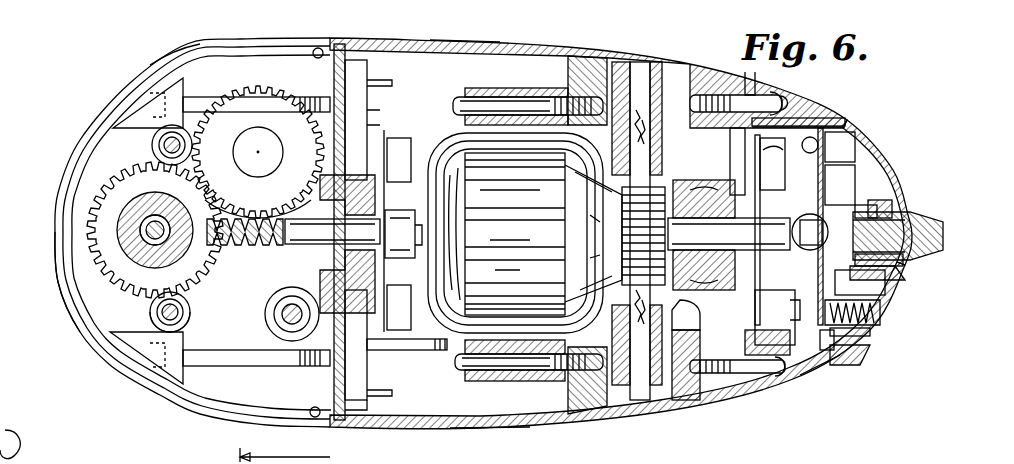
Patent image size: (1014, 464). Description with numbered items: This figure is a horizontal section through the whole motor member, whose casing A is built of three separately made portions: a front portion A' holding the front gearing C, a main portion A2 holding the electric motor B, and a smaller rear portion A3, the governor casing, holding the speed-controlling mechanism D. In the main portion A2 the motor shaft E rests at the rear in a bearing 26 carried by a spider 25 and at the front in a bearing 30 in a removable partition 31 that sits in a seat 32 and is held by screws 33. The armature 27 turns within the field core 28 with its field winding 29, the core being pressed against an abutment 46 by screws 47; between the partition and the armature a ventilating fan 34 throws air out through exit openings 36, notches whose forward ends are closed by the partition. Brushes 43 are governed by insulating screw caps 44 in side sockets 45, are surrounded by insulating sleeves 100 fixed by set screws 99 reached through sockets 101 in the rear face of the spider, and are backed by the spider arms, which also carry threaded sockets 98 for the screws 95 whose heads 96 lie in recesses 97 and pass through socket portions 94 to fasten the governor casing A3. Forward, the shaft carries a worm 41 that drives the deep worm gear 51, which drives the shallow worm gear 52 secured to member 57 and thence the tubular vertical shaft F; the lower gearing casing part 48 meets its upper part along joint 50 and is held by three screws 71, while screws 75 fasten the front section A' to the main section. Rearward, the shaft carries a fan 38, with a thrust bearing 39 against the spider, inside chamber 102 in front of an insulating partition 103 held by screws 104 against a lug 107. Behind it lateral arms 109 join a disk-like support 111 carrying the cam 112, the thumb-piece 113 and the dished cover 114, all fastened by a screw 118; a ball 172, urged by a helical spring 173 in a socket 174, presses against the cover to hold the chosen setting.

The spider 25 is at (737, 175).
The bearing 26 is at (700, 232).
The armature 27 is at (603, 243).
The field core 28 is at (545, 88).
The field winding 29 is at (492, 150).
The bearing 30 is at (325, 258).
The removable partition 31 is at (338, 386).
The seat 32 is at (346, 62).
The screws 33 is at (428, 350).
The ventilating fan or impeller 34 is at (399, 322).
The air exit openings 36 is at (360, 395).
The fan or impeller 38 is at (783, 160).
The thrust bearing 39 is at (758, 195).
The worm 41 is at (262, 215).
The brushes 43 is at (560, 375).
The adjustable screw caps 44 is at (628, 62).
The sockets 45 is at (640, 400).
The abutment 46 is at (590, 60).
The screws 47 is at (510, 97).
The lower part of the gearing casing 48 is at (95, 310).
The joint 50 is at (70, 296).
The deep worm gear 51 is at (268, 121).
The shallow worm gear 52 is at (142, 175).
The member 57 is at (148, 236).
The screws 71 is at (168, 140).
The screws 75 is at (200, 100).
The socket portions 94 is at (748, 78).
The screws 95 is at (790, 100).
The heads 96 is at (800, 108).
The recesses 97 is at (815, 120).
The threaded sockets 98 is at (708, 95).
The set screws 99 is at (690, 385).
The insulating sleeves 100 is at (590, 410).
The sockets 101 is at (768, 357).
The chamber 102 is at (793, 320).
The partition 103 is at (824, 140).
The screws 104 is at (845, 340).
The lug 107 is at (845, 148).
The lateral arms 109 is at (856, 170).
The central disk-like support 111 is at (892, 205).
The cam 112 is at (905, 225).
The thumb-piece or head 113 is at (920, 245).
The dished cover member 114 is at (868, 356).
The screw 118 is at (905, 272).
The ball 172 is at (882, 318).
The helical spring 173 is at (870, 330).
The socket 174 is at (890, 280).
The casing A is at (465, 30).
The front portion of the casing A' is at (175, 43).
The main portion of the casing A2 is at (490, 432).
The rear portion of the casing A3 is at (832, 367).
The electric motor B is at (538, 243).
The front gearing C is at (245, 262).
The speed-controlling mechanism D is at (896, 181).
The motor shaft E is at (400, 235).
The vertical shaft F is at (147, 225).